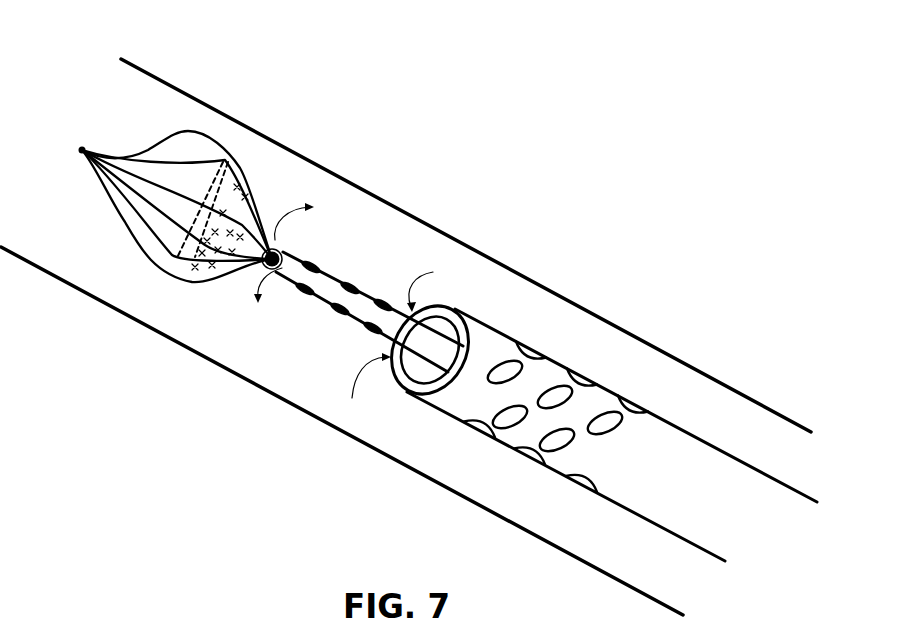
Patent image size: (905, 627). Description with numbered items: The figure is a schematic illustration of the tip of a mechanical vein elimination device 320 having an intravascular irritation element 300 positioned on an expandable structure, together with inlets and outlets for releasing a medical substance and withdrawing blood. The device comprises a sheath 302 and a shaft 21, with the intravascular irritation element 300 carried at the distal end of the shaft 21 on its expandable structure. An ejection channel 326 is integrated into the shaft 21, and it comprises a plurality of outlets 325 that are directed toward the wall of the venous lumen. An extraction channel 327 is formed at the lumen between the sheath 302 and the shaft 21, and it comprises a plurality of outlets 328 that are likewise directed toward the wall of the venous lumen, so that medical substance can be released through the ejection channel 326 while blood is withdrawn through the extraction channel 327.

The shaft 21 is at (272, 290).
The intravascular irritation element 300 is at (260, 218).
The sheath 302 is at (597, 359).
The mechanical vein elimination device 320 is at (82, 125).
The outlets 325 is at (374, 238).
The ejection channel 326 is at (327, 284).
The extraction channel 327 is at (485, 343).
The outlets 328 is at (520, 352).